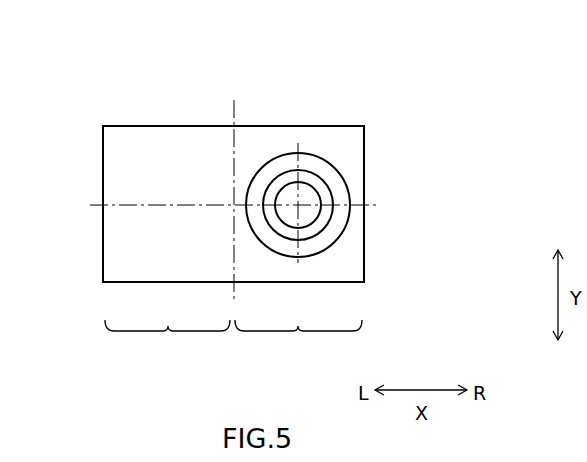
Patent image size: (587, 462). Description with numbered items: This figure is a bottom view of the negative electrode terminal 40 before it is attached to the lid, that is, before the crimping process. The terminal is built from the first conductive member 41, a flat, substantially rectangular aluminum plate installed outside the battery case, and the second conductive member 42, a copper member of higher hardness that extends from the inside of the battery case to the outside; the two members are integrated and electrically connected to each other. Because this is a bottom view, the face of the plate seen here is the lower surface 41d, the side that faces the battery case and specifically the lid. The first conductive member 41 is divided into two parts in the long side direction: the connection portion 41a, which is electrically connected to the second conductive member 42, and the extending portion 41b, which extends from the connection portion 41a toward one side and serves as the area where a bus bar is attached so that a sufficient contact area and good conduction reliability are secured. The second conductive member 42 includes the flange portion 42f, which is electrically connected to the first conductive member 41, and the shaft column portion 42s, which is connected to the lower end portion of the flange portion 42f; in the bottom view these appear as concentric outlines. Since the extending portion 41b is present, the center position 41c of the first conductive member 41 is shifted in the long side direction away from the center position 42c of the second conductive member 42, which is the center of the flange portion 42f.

The negative electrode terminal 40 is at (364, 98).
The first conductive member 41 is at (126, 113).
The connection portion 41a is at (298, 342).
The extending portion 41b is at (167, 342).
The center position 41c is at (233, 206).
The lower surface 41d is at (123, 155).
The second conductive member 42 is at (345, 241).
The center position 42c is at (298, 205).
The flange portion 42f is at (337, 172).
The shaft column portion 42s is at (322, 220).